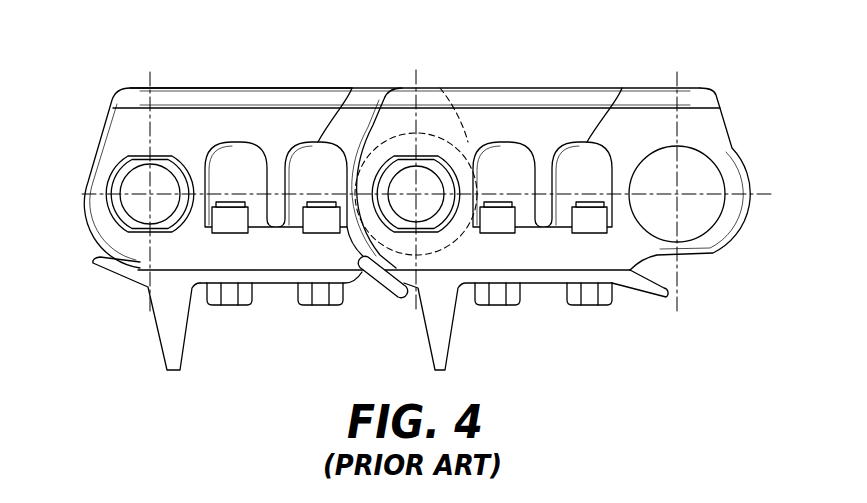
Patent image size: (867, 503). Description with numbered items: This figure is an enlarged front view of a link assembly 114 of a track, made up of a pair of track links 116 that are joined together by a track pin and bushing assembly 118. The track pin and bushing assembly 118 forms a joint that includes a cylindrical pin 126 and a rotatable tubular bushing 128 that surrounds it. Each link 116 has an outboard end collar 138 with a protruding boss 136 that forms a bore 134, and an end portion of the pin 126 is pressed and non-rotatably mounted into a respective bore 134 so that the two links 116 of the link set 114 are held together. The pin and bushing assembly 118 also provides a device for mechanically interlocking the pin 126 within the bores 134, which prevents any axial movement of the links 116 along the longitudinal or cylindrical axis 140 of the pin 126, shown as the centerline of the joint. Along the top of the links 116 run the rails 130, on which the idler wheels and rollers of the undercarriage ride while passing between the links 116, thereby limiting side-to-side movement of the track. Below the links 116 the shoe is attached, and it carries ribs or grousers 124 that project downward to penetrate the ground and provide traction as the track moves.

The link assembly 114 is at (730, 104).
The track link 116 is at (104, 136).
The track pin and bushing assembly 118 is at (403, 212).
The grouser 124 is at (170, 340).
The cylindrical pin 126 is at (405, 178).
The rotatable tubular bushing 128 is at (482, 185).
The rail 130 is at (465, 88).
The bore 134 is at (122, 193).
The protruding boss 136 is at (167, 227).
The outboard end collar 138 is at (98, 216).
The longitudinal axis 140 is at (440, 230).